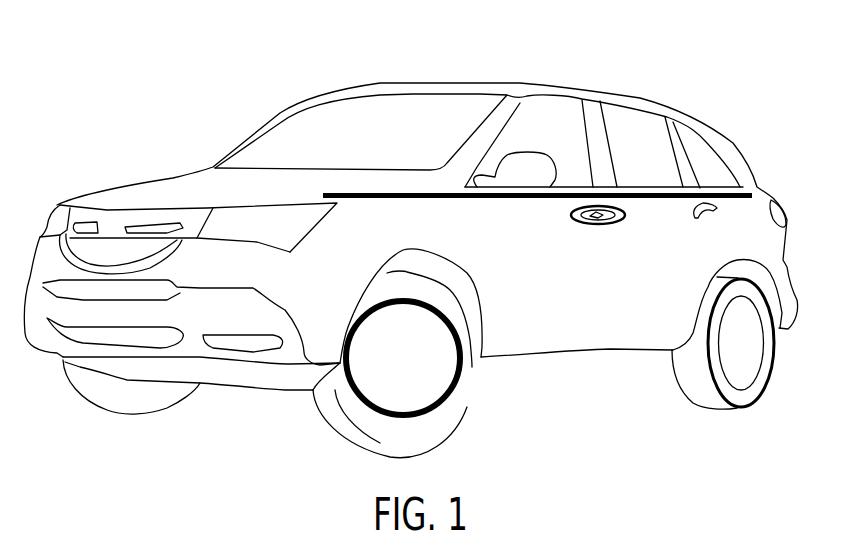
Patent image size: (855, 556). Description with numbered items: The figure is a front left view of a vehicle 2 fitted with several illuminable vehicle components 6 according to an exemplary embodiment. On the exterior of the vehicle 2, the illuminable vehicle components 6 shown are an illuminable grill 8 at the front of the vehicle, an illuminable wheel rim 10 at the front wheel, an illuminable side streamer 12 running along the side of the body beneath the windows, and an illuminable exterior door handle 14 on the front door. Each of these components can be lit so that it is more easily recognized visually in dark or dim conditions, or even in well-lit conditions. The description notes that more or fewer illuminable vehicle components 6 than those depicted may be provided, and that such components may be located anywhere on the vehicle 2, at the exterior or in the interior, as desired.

The vehicle 2 is at (235, 115).
The illuminable vehicle component 6 is at (404, 256).
The illuminable grill 8 is at (97, 222).
The illuminable wheel rim 10 is at (447, 408).
The illuminable side streamer 12 is at (680, 192).
The illuminable exterior door handle 14 is at (597, 227).